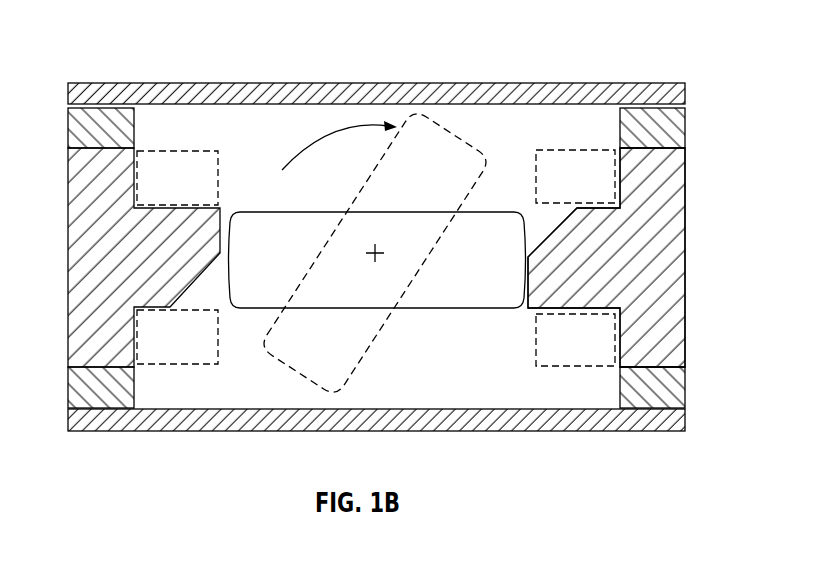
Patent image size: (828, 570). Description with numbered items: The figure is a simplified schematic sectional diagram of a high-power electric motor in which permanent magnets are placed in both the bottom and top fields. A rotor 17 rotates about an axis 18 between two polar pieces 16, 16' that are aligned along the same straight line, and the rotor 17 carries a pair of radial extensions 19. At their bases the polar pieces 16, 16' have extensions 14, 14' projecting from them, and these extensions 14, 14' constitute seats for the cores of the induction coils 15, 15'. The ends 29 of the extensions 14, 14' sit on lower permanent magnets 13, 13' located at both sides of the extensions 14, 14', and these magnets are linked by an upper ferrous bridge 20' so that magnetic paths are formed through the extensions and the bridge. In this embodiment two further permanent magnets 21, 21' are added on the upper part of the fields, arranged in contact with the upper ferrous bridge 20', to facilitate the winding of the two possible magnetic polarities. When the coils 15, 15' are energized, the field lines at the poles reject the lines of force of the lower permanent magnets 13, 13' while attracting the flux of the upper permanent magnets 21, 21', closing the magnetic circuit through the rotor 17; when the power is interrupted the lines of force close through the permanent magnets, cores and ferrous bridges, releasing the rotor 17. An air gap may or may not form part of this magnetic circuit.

The permanent magnet 13 is at (678, 387).
The permanent magnet 13' is at (73, 386).
The extension 14 is at (632, 257).
The extension 14' is at (116, 257).
The induction coil 15 is at (584, 394).
The induction coil 15' is at (175, 393).
The polar piece 16 is at (552, 128).
The polar piece 16' is at (145, 127).
The rotor 17 is at (466, 310).
The axis 18 is at (382, 257).
The radial extensions 19 is at (420, 115).
The upper ferrous bridge 20' is at (376, 76).
The permanent magnet 21 is at (678, 125).
The permanent magnet 21' is at (73, 126).
The ends of the extensions 29 is at (657, 187).